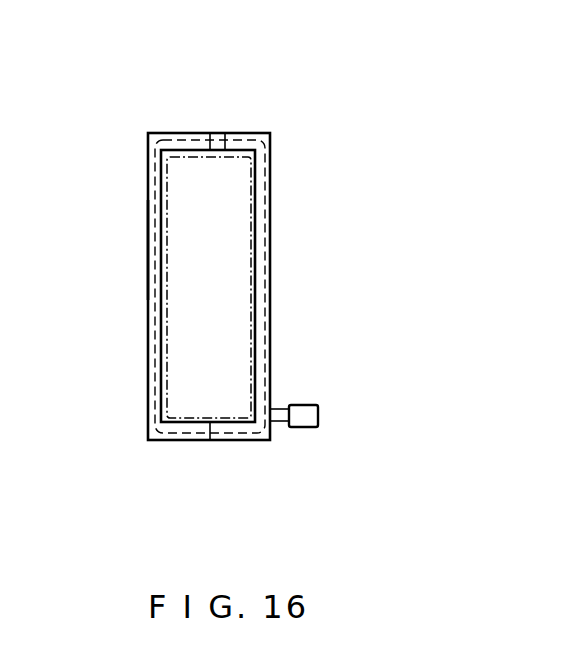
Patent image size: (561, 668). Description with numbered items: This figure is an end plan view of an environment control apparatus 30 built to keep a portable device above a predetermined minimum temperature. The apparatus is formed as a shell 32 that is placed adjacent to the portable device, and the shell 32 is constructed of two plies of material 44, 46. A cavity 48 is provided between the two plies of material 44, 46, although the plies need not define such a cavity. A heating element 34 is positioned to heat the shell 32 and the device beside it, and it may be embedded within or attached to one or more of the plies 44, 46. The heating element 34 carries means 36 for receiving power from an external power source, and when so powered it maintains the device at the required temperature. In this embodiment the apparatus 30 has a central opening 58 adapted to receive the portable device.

The environment control apparatus 30 is at (421, 201).
The shell 32 is at (288, 297).
The heating element 34 is at (259, 144).
The means for receiving power 36 is at (302, 412).
The ply of material 44 is at (271, 257).
The ply of material 46 is at (147, 249).
The cavity 48 is at (227, 150).
The central opening 58 is at (178, 184).